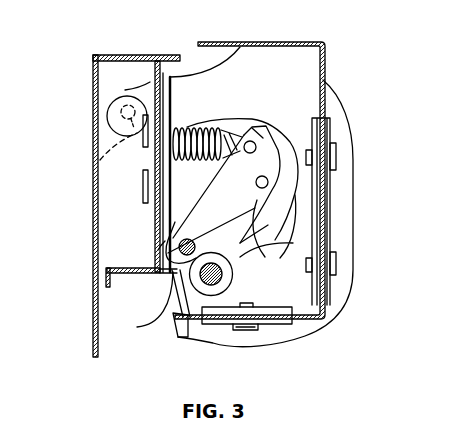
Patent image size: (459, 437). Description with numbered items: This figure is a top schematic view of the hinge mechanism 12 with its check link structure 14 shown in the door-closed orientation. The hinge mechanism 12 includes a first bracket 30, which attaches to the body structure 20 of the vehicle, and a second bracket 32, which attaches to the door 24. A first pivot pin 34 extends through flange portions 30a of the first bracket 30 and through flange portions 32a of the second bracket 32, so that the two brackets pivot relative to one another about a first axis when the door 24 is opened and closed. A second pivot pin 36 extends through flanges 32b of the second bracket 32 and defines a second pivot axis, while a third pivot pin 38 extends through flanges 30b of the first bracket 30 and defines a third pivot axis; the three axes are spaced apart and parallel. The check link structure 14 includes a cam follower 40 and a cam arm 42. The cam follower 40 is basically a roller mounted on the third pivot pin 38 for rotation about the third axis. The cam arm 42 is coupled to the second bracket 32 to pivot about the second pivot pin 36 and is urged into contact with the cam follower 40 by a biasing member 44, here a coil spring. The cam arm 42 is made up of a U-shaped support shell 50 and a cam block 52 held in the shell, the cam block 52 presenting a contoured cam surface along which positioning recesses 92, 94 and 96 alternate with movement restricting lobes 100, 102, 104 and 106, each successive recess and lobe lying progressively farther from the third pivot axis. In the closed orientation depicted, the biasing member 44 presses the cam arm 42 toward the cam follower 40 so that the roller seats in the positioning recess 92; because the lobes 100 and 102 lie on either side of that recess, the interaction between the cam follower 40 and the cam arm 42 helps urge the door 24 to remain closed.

The hinge mechanism 12 is at (165, 277).
The check link structure 14 is at (247, 262).
The body structure 20 is at (278, 42).
The door 24 is at (92, 187).
The first bracket 30 is at (293, 70).
The flange portions 30a is at (125, 90).
The flanges 30b is at (245, 285).
The second bracket 32 is at (165, 212).
The flange portions 32a is at (100, 159).
The flanges 32b is at (165, 241).
The first pivot pin 34 is at (130, 115).
The second pivot pin 36 is at (176, 240).
The third pivot pin 38 is at (203, 287).
The cam follower 40 is at (217, 289).
The cam arm 42 is at (268, 125).
The biasing member 44 is at (195, 130).
The support shell 50 is at (237, 180).
The cam block 52 is at (288, 185).
The positioning recess 92 is at (223, 236).
The positioning recess 94 is at (280, 235).
The positioning recess 96 is at (285, 160).
The movement restricting lobe 100 is at (137, 327).
The movement restricting lobe 102 is at (257, 263).
The movement restricting lobe 104 is at (295, 195).
The movement restricting lobe 106 is at (282, 147).